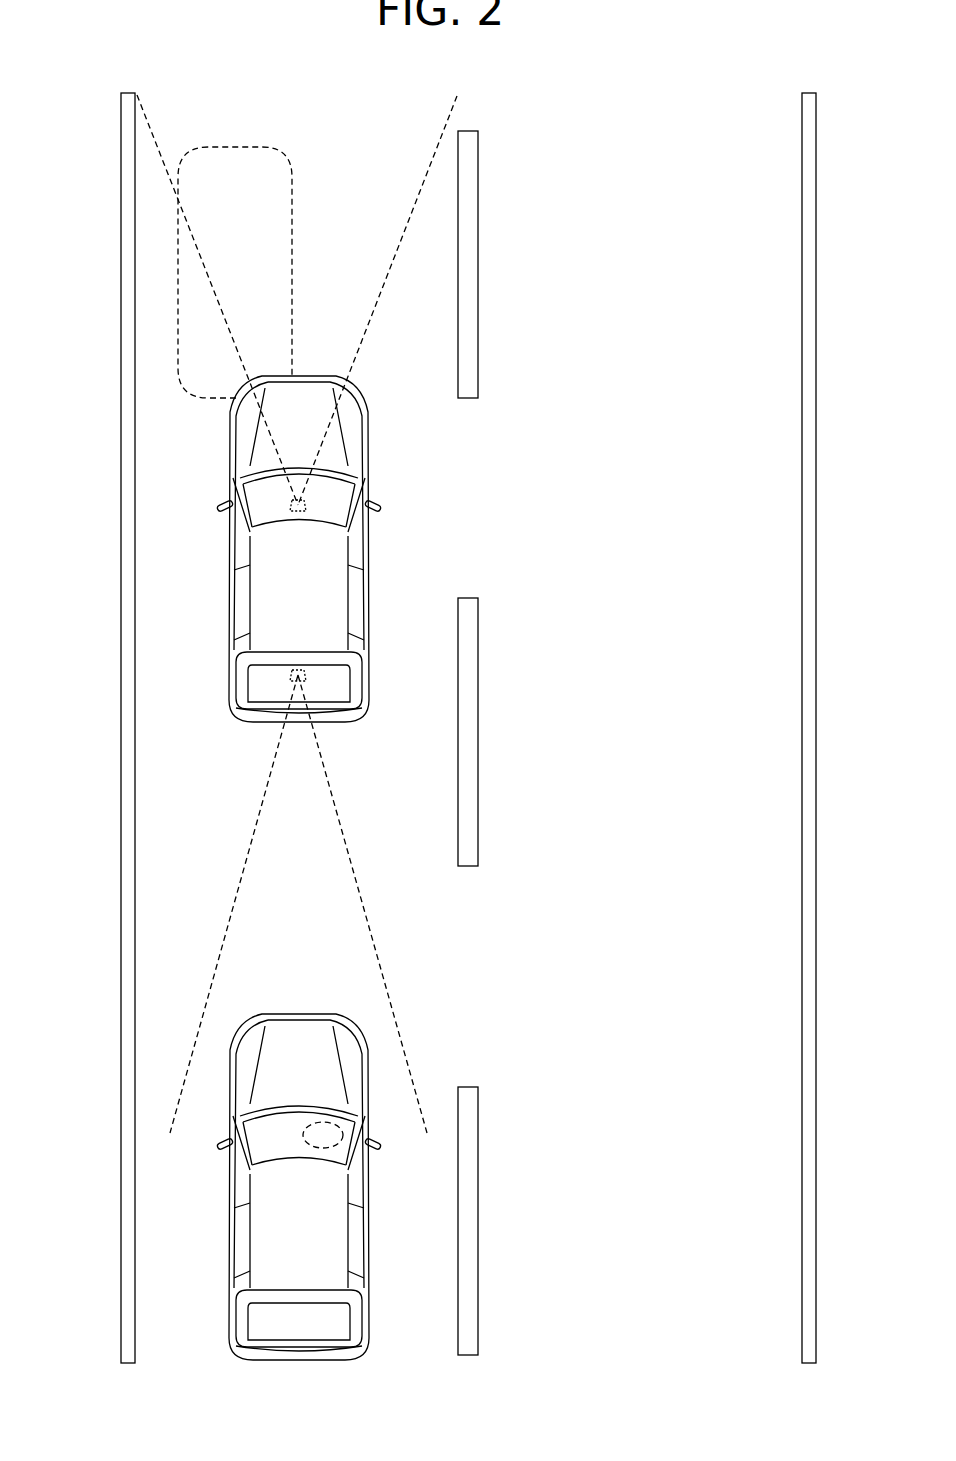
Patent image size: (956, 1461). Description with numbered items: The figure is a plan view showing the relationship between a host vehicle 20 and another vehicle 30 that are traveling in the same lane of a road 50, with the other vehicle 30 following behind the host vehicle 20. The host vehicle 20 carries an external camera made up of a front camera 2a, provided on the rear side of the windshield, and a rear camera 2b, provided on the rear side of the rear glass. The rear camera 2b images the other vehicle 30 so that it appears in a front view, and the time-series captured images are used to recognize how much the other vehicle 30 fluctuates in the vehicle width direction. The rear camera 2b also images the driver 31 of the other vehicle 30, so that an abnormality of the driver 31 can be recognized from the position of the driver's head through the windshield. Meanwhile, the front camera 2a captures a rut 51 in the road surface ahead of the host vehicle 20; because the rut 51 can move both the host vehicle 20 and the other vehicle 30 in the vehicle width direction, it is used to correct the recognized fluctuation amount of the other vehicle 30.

The road 50 is at (619, 132).
The rut 51 is at (233, 147).
The host vehicle 20 is at (227, 600).
The front camera 2a is at (312, 509).
The rear camera 2b is at (305, 672).
The other vehicle 30 is at (228, 1238).
The driver 31 is at (343, 1148).